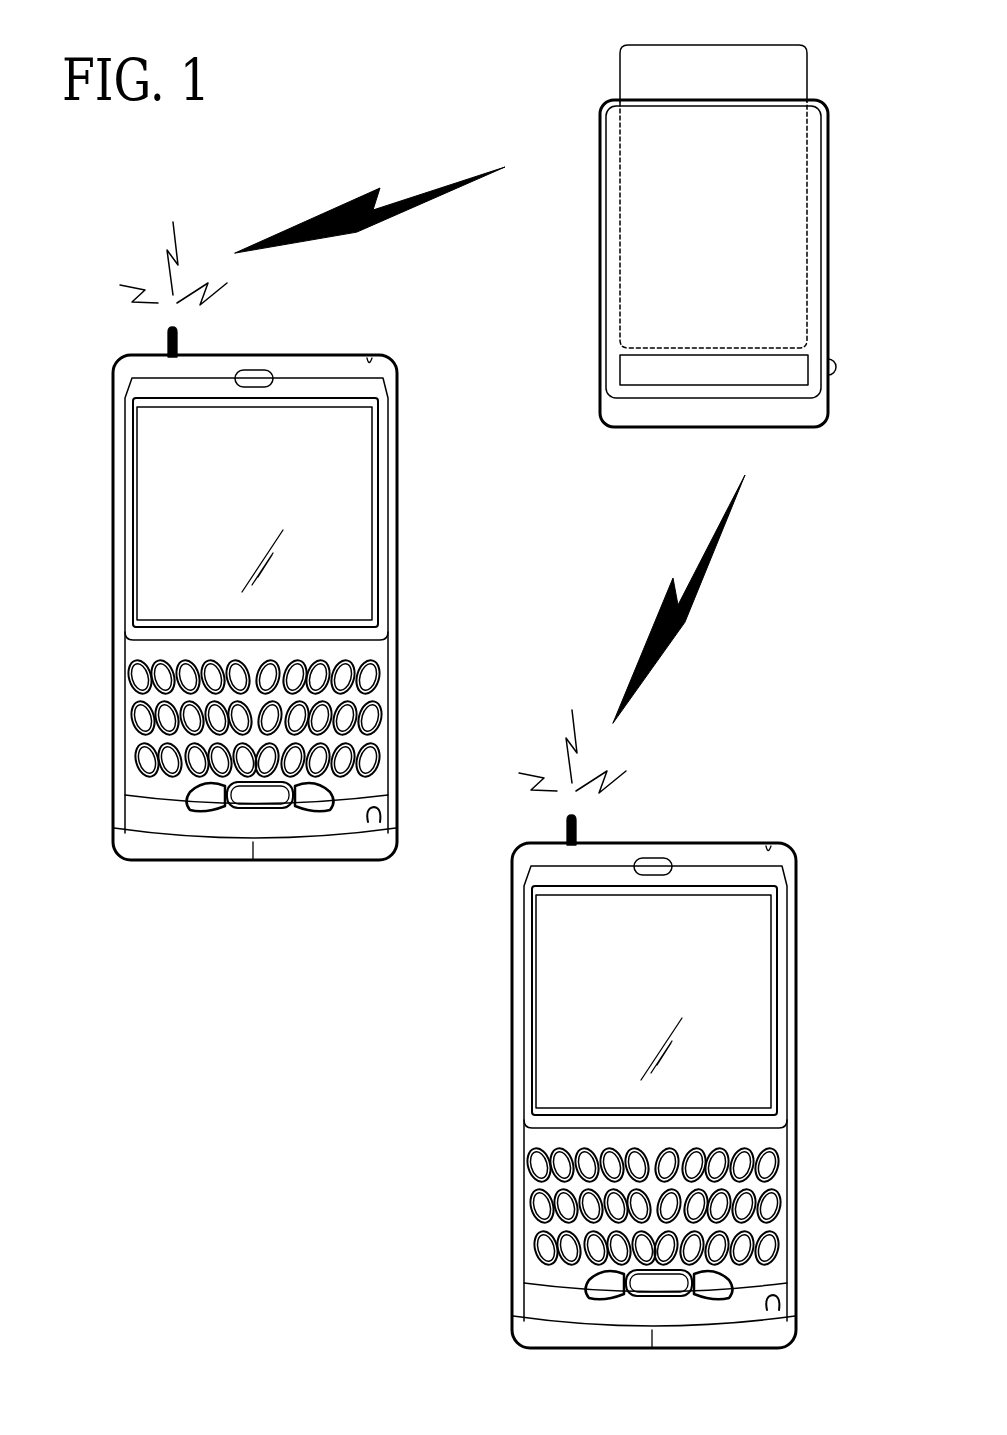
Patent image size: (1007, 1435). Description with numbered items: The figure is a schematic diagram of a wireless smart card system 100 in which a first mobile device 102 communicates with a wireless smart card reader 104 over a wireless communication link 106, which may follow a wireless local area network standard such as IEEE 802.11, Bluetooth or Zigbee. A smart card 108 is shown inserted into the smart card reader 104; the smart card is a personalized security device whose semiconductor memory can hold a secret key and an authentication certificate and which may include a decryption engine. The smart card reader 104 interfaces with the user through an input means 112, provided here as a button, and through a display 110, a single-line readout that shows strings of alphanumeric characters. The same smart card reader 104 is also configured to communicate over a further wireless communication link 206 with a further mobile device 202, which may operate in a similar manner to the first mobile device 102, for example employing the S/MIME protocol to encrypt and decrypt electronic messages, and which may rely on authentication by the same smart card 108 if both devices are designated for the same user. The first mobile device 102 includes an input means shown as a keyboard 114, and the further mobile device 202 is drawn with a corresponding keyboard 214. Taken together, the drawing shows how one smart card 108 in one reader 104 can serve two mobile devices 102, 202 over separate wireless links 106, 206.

The system 100 is at (242, 1082).
The first mobile device 102 is at (658, 1029).
The wireless smart card reader 104 is at (711, 236).
The wireless communication link 106 is at (635, 614).
The smart card 108 is at (668, 45).
The display 110 is at (725, 388).
The input means 112 is at (840, 370).
The keyboard 114 is at (781, 1138).
The further mobile device 202 is at (259, 541).
The further wireless communication link 206 is at (328, 190).
The keyboard of first mobile device 214 is at (382, 650).